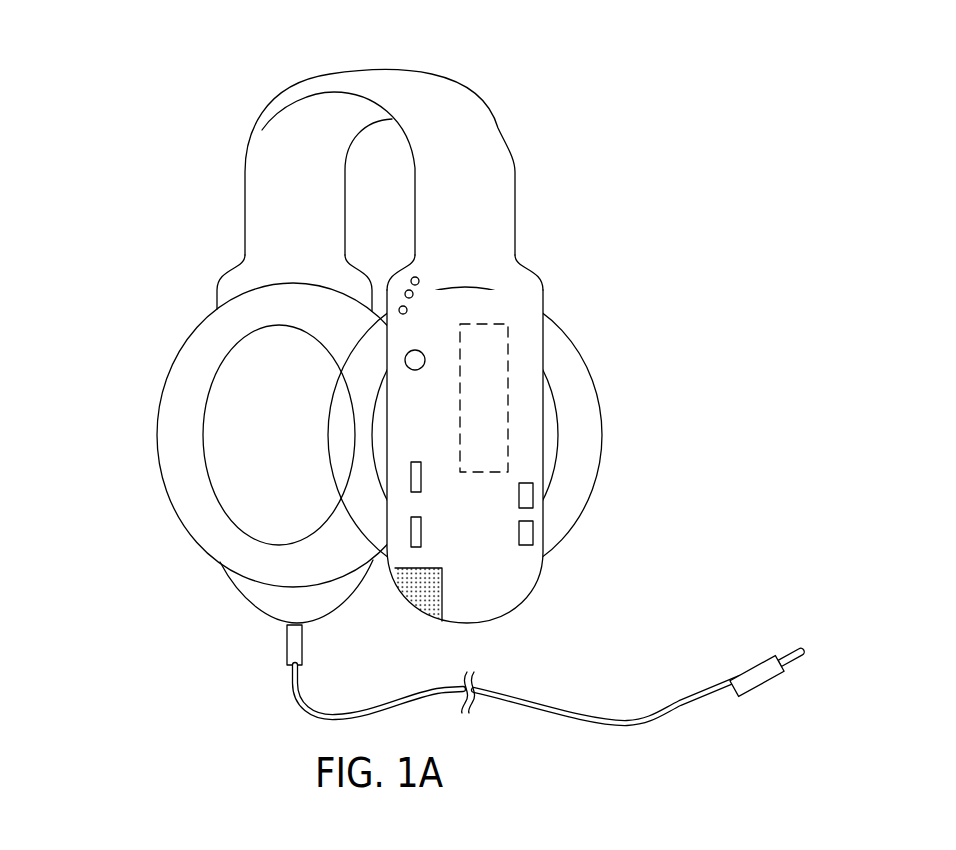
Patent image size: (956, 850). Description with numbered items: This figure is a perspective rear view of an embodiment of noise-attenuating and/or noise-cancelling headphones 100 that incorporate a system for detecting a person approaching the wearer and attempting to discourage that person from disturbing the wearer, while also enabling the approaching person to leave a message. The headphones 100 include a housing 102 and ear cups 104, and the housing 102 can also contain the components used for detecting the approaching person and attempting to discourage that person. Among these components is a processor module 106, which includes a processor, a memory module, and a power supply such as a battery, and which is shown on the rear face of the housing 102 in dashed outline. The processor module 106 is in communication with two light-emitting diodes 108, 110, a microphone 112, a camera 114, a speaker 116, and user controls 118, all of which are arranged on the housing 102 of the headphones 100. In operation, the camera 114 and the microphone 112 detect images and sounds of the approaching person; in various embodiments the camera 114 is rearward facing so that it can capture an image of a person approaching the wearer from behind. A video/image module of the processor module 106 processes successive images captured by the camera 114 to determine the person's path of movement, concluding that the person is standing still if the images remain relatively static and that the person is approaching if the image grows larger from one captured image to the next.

The headphones 100 is at (453, 376).
The housing 102 is at (427, 101).
The ear cups 104 is at (198, 365).
The processor module 106 is at (478, 322).
The light-emitting diode 108 is at (421, 473).
The light-emitting diode 110 is at (421, 533).
The microphone 112 is at (437, 290).
The camera 114 is at (419, 370).
The speaker 116 is at (418, 588).
The user controls 118 is at (500, 544).